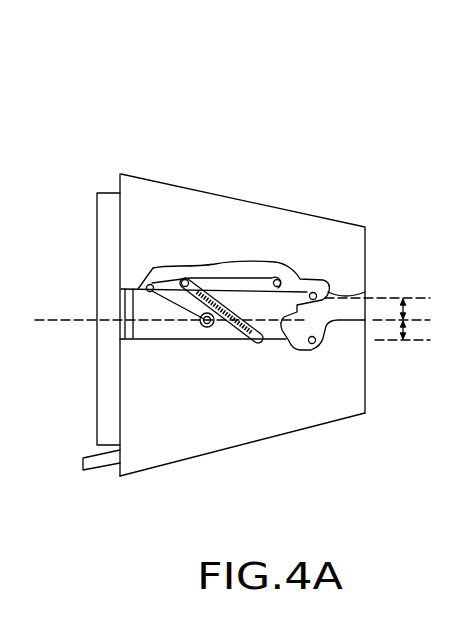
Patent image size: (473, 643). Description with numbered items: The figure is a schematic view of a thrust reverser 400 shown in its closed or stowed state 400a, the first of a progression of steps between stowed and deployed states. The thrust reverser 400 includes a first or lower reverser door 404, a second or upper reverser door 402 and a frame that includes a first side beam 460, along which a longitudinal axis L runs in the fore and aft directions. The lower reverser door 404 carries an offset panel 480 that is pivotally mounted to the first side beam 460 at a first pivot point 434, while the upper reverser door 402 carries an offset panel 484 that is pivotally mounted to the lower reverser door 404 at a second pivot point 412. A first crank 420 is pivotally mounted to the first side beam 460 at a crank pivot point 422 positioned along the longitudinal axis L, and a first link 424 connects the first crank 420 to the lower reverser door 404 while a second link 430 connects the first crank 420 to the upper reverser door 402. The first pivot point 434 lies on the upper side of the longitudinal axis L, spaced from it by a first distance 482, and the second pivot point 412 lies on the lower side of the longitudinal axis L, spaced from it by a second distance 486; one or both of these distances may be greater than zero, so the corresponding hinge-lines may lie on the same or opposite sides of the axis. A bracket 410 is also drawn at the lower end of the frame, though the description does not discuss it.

The closed or stowed state 400a is at (139, 84).
The thrust reverser 400 is at (116, 154).
The second or upper reverser door 402 is at (215, 188).
The first or lower reverser door 404 is at (233, 448).
The mounting bracket 410 is at (83, 465).
The second pivot point 412 is at (322, 344).
The first crank 420 is at (162, 290).
The crank pivot point 422 is at (200, 326).
The first link 424 is at (230, 323).
The second link 430 is at (230, 290).
The first pivot point 434 is at (365, 292).
The first side beam 460 is at (140, 304).
The offset panel 480 is at (323, 280).
The first distance 482 is at (404, 302).
The offset panel 484 is at (289, 327).
The second distance 486 is at (404, 337).
The longitudinal axis L is at (62, 326).